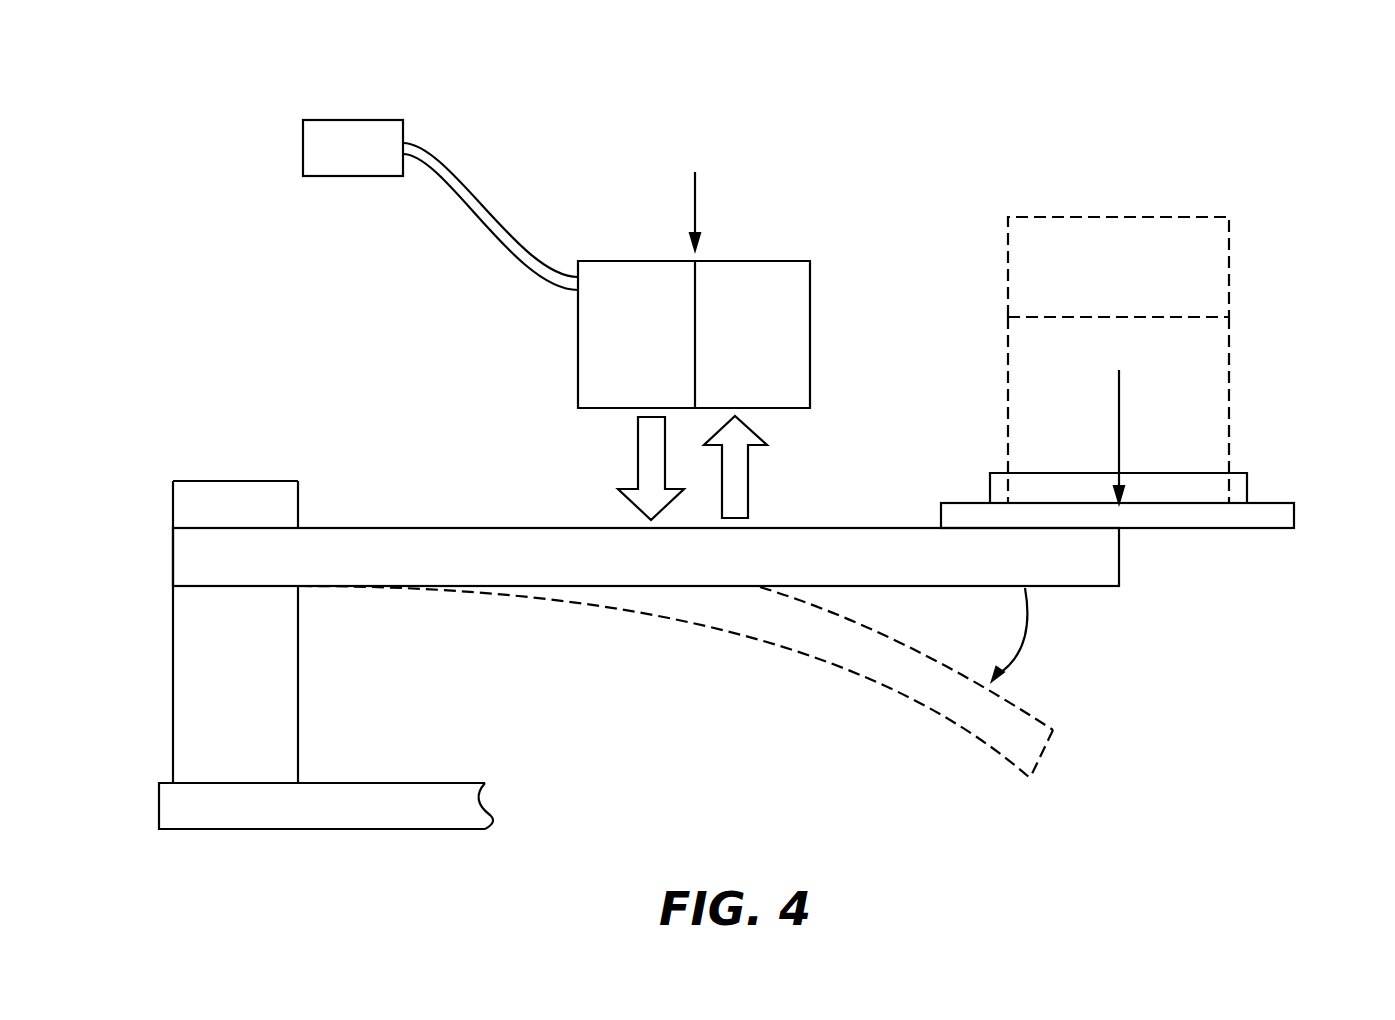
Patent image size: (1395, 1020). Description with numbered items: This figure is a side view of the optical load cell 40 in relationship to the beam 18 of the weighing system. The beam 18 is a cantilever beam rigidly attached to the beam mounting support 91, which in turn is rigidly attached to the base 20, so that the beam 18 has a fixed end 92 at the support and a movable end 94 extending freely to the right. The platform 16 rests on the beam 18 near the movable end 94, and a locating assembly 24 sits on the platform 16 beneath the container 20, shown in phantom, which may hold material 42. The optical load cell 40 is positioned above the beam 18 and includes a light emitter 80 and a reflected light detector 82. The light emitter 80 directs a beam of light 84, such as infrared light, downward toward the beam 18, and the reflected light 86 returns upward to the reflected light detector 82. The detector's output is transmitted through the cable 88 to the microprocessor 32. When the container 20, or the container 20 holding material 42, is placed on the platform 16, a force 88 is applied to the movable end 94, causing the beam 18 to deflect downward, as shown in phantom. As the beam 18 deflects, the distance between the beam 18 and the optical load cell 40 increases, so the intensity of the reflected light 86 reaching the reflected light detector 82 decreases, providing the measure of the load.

The platform 16 is at (1285, 522).
The beam 18 is at (414, 545).
The base 20 is at (371, 800).
The locating assembly 24 is at (1237, 485).
The microprocessor 32 is at (367, 132).
The optical load cell 40 is at (694, 196).
The material 42 is at (1217, 363).
The light emitter 80 is at (593, 393).
The reflected light detector 82 is at (793, 393).
The beam of light 84 is at (648, 470).
The reflected light 86 is at (737, 468).
The cable 88 is at (442, 163).
The beam mounting support 91 is at (282, 650).
The fixed end 92 is at (296, 557).
The movable end 94 is at (1107, 558).